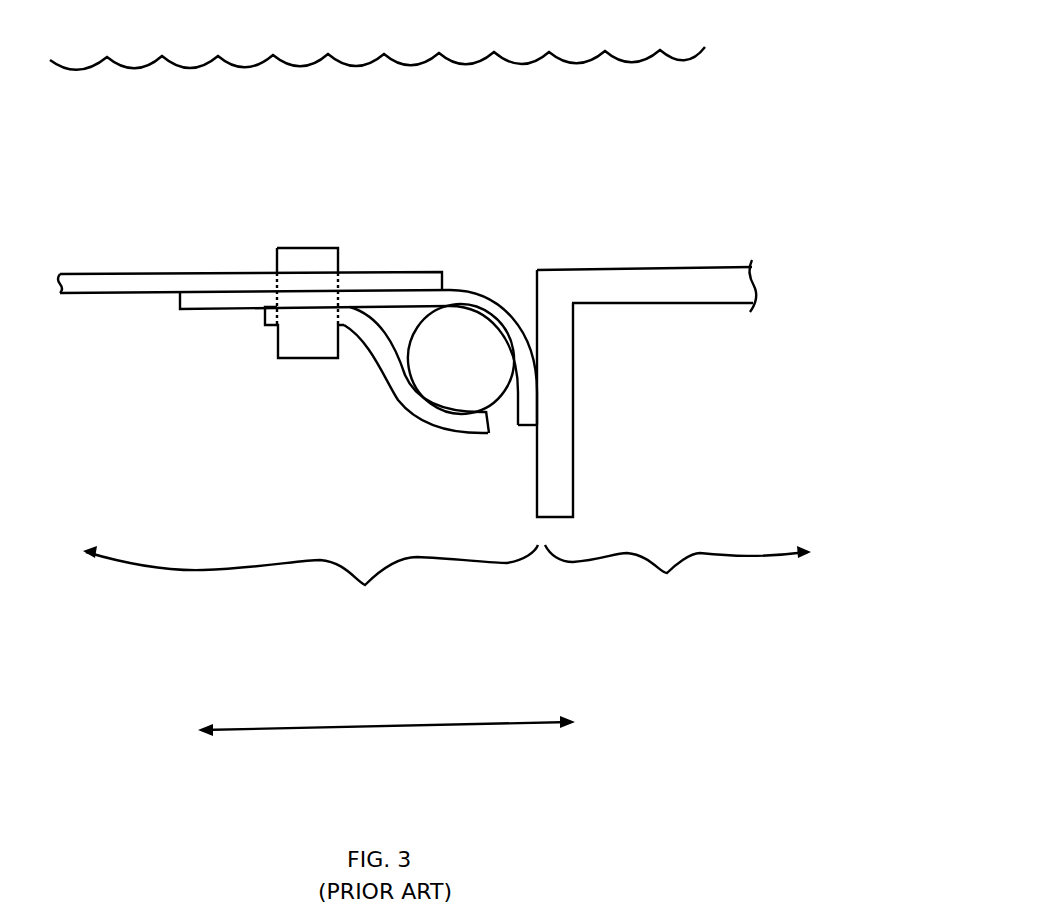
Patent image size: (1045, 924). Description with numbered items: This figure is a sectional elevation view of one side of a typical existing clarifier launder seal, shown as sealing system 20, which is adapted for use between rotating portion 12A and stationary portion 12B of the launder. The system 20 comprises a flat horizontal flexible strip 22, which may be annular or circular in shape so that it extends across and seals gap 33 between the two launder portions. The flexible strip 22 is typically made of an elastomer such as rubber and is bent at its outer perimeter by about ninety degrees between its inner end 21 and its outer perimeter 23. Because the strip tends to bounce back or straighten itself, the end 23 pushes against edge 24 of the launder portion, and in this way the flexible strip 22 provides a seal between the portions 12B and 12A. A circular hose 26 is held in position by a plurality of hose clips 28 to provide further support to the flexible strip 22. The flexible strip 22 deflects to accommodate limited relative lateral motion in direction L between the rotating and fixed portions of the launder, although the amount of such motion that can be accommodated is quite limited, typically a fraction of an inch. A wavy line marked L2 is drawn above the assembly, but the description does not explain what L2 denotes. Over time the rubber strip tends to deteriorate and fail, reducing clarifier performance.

The water level / liquid line L2 is at (366, 68).
The sealing system 20 is at (431, 165).
The inner end 21 is at (205, 301).
The flexible strip 22 is at (476, 298).
The outer perimeter 23 is at (528, 426).
The edge 24 is at (535, 301).
The circular hose 26 is at (460, 375).
The hose clips 28 is at (404, 392).
The gap 33 is at (510, 258).
The rotating portion 12A is at (678, 580).
The stationary portion 12B is at (310, 583).
The direction L is at (372, 727).